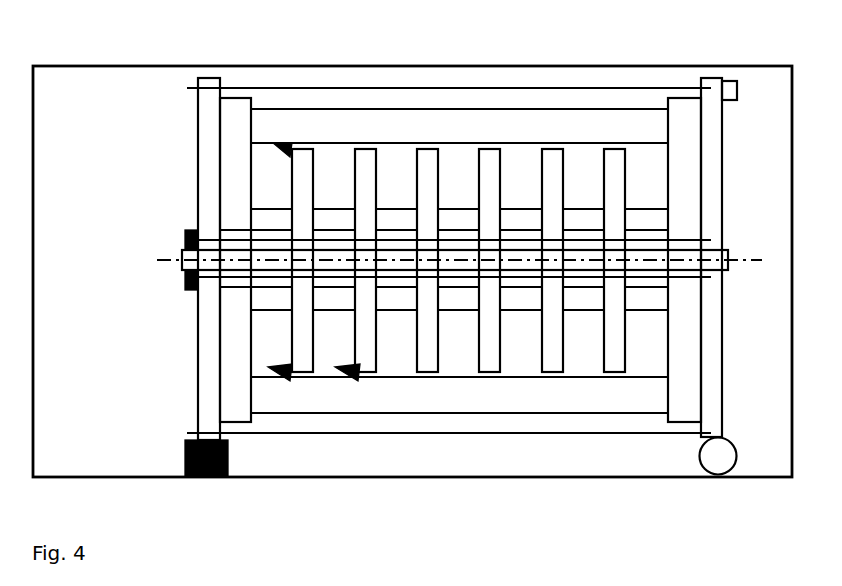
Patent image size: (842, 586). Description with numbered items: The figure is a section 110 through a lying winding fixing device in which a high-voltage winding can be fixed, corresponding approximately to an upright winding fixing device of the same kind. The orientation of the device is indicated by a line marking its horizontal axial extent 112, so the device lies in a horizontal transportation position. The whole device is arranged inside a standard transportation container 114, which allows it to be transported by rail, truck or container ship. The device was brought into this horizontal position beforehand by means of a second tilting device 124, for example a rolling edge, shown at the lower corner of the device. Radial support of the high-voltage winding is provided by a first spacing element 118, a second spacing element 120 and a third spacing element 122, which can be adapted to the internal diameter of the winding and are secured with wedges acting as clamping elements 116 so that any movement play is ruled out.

The section through a third winding fixing device in a container 110 is at (497, 300).
The horizontal axial extent of the winding fixing device 112 is at (750, 262).
The container 114 is at (132, 65).
The clamping element 116 is at (278, 377).
The first spacing element of third winding fixing device 118 is at (425, 356).
The second spacing element of third winding fixing device 120 is at (461, 303).
The third spacing element of third winding fixing device 122 is at (487, 356).
The second tilting device 124 is at (730, 448).